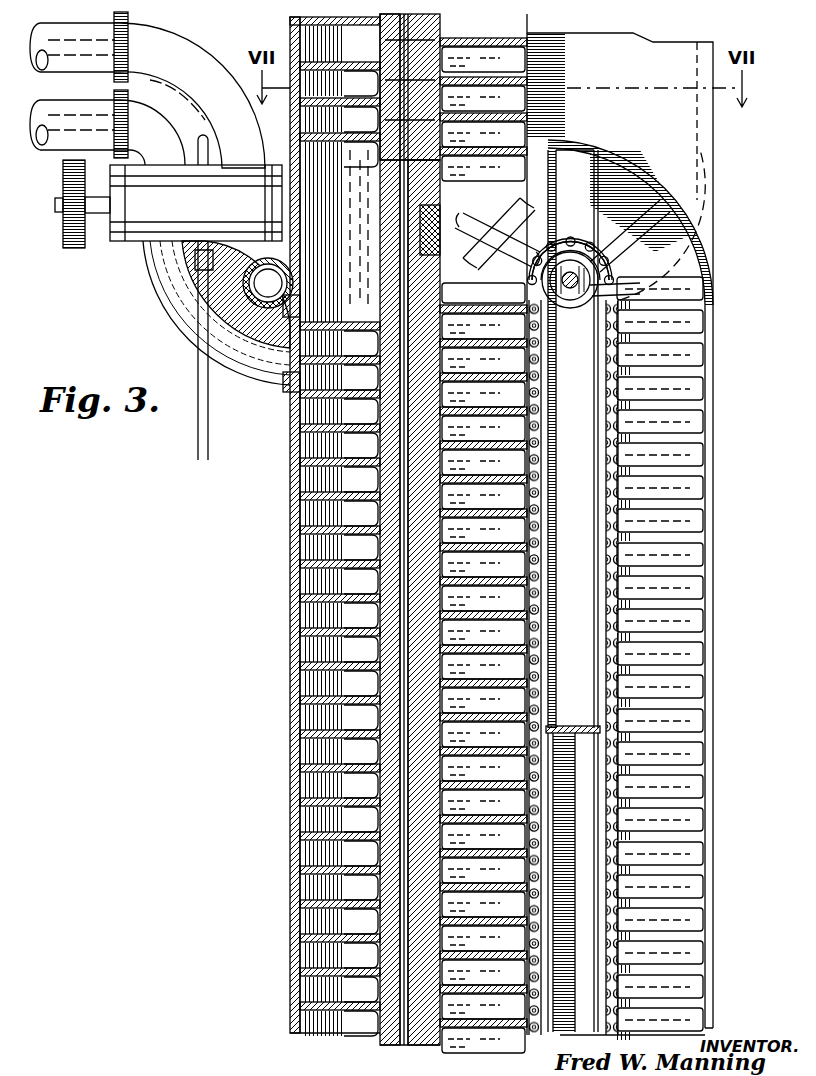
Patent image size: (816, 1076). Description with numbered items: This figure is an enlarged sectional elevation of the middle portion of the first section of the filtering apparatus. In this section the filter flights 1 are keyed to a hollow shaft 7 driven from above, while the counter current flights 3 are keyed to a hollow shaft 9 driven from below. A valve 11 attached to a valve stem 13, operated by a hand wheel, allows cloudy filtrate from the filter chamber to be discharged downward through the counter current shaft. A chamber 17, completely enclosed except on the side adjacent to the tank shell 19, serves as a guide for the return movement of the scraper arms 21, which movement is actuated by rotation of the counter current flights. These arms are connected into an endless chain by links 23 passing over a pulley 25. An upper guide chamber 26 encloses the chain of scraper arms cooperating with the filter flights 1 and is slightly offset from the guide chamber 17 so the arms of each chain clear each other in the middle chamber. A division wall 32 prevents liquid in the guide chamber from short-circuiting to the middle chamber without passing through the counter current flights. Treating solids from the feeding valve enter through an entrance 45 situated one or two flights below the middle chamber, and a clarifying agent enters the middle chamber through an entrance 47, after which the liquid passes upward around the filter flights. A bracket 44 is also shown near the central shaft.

The filter flights 1 is at (290, 135).
The counter current flights 3 is at (290, 320).
The hollow shaft 7 is at (392, 185).
The hollow shaft 9 is at (405, 1043).
The valve 11 is at (527, 100).
The valve stem 13 is at (527, 62).
The chamber 17 is at (713, 775).
The tank shell 19 is at (292, 853).
The scraper arms 21 is at (690, 290).
The links 23 is at (606, 530).
The pulley 25 is at (582, 292).
The upper guide chamber 26 is at (713, 180).
The division wall 32 is at (580, 735).
The bracket 44 is at (420, 235).
The entrance 45 is at (290, 372).
The entrance 47 is at (275, 290).